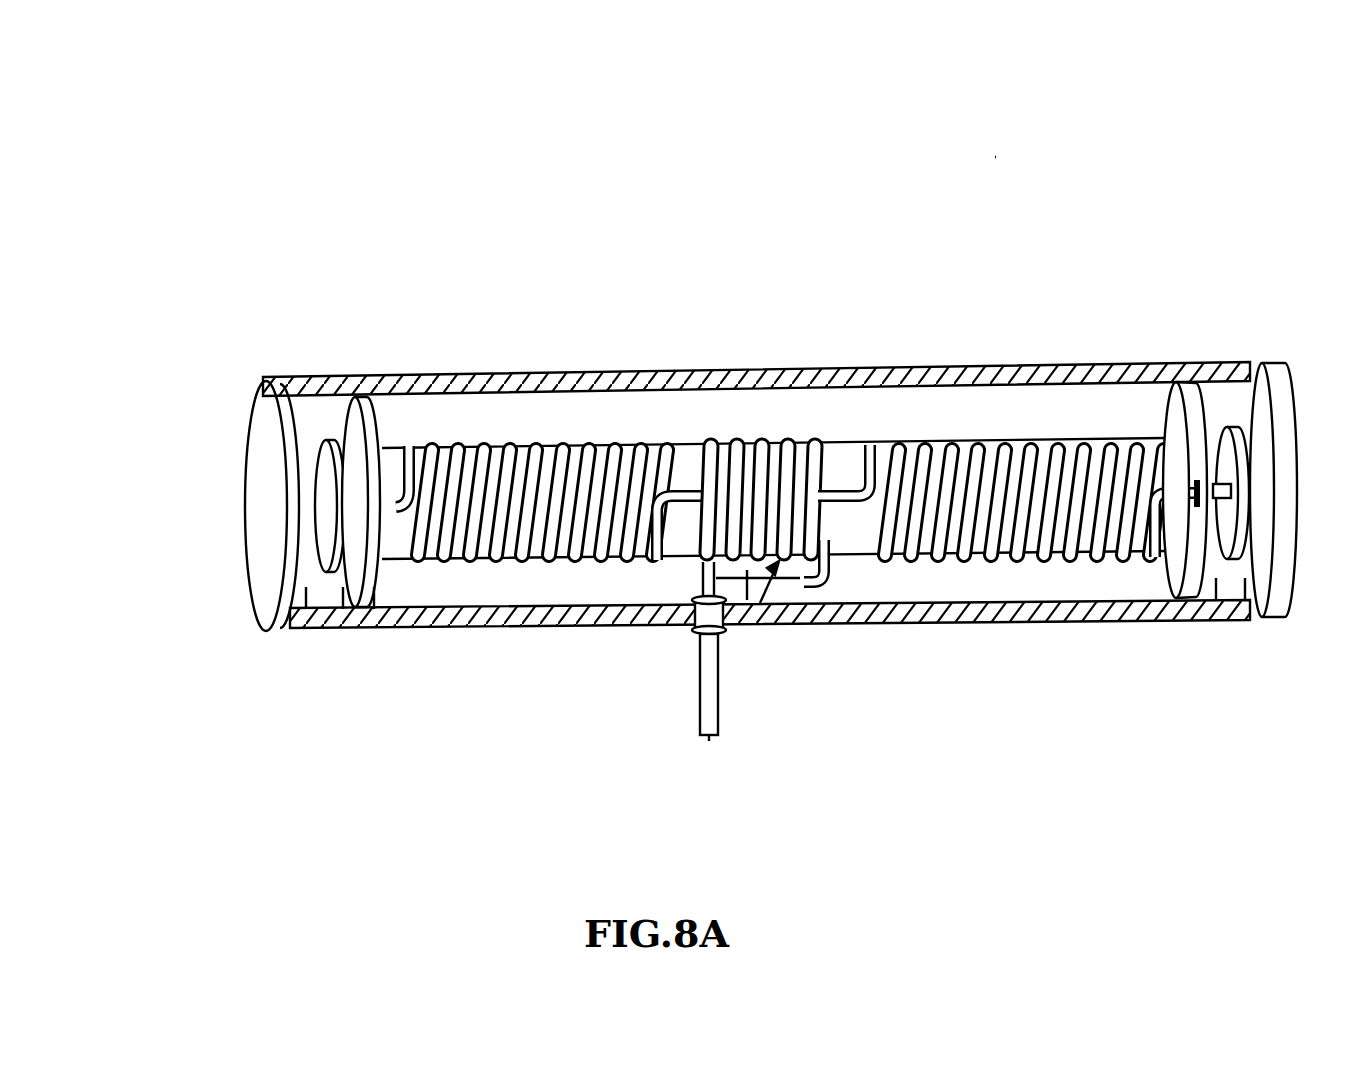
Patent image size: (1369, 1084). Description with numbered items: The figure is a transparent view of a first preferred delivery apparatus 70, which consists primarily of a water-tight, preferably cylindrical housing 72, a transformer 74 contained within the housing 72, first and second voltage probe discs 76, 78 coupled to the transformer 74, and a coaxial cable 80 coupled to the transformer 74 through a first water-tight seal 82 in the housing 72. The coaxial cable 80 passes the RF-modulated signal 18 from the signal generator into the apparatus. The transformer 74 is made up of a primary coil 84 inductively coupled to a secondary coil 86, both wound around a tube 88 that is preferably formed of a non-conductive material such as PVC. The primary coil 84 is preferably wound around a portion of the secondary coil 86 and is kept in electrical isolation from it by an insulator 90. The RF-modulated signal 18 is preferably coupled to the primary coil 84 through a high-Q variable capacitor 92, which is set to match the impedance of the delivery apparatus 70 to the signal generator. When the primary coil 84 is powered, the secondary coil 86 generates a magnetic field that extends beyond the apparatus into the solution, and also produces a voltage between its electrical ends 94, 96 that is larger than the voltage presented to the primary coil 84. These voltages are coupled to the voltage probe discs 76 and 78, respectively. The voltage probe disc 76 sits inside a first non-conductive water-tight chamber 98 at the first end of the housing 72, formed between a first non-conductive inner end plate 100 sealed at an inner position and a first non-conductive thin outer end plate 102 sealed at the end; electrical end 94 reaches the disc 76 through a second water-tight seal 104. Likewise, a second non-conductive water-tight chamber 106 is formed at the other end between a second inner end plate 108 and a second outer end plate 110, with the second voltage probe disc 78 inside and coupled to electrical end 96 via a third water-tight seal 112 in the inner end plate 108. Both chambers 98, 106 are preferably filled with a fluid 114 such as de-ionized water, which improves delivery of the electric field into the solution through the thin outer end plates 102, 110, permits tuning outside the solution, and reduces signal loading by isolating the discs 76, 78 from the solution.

The RF-modulated signal 18 is at (709, 742).
The delivery apparatus 70 is at (995, 157).
The housing 72 is at (750, 373).
The transformer 74 is at (572, 417).
The first voltage probe disc 76 is at (325, 506).
The second voltage probe disc 78 is at (1240, 430).
The coaxial cable 80 is at (720, 700).
The first water-tight seal 82 is at (695, 635).
The primary coil 84 is at (705, 440).
The secondary coil 86 is at (953, 437).
The tube 88 is at (392, 550).
The insulator 90 is at (852, 448).
The variable capacitor 92 is at (760, 603).
The electrical end 94 is at (418, 445).
The electrical end 96 is at (1193, 486).
The first non-conductive water-tight chamber 98 is at (343, 611).
The first non-conductive inner end plate 100 is at (374, 611).
The first non-conductive thin outer end plate 102 is at (262, 385).
The second water-tight seal 104 is at (343, 400).
The second non-conductive water-tight chamber 106 is at (1216, 603).
The second inner end plate 108 is at (1192, 398).
The second outer end plate 110 is at (1278, 368).
The third water-tight seal 112 is at (1170, 553).
The fluid 114 is at (306, 611).